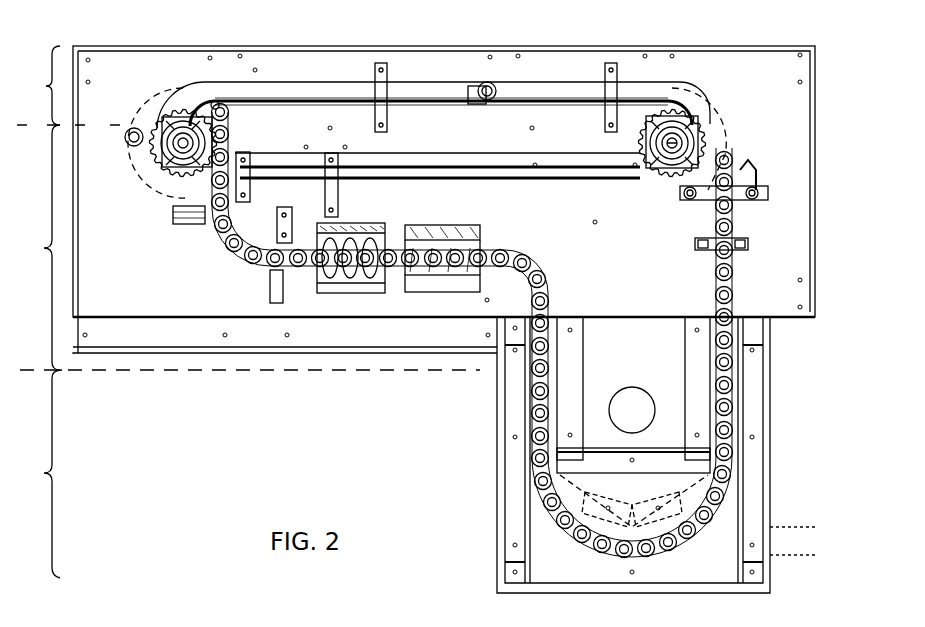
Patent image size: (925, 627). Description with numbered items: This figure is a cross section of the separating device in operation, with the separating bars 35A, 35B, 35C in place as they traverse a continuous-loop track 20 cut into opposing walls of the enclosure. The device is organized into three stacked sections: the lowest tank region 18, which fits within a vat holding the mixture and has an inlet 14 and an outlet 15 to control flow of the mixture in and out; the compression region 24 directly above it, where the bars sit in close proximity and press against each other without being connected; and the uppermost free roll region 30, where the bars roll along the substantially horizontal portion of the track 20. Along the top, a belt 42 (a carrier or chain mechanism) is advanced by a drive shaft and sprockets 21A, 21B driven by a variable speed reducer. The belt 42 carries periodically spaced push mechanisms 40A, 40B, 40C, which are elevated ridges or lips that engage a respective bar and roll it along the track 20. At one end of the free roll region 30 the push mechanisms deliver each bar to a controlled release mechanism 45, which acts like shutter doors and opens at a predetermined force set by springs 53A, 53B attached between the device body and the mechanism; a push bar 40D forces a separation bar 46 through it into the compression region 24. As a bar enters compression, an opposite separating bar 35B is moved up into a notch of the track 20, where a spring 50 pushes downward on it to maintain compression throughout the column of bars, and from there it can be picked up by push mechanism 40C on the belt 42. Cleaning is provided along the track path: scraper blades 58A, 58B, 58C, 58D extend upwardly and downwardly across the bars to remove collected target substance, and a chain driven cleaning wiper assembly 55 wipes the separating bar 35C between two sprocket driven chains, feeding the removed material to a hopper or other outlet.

The inlet 14 is at (818, 535).
The outlet 15 is at (643, 420).
The tank region 18 is at (38, 474).
The track 20 is at (742, 92).
The sprocket 21A is at (706, 127).
The sprocket 21B is at (165, 115).
The compression region 24 is at (247, 247).
The free roll region 30 is at (69, 85).
The separating bar 35A is at (485, 82).
The separating bar 35B is at (173, 212).
The separating bar 35C is at (270, 281).
The push mechanism 40A is at (468, 90).
The push mechanism 40B is at (134, 146).
The push mechanism 40C is at (258, 190).
The push bar 40D is at (722, 140).
The belt 42 is at (209, 98).
The controlled release mechanism 45 is at (762, 208).
The separation bar 46 is at (725, 213).
The spring 50 is at (238, 147).
The spring 53A is at (700, 177).
The spring 53B is at (743, 183).
The cleaning wiper assembly 55 is at (397, 296).
The scraper blade 58A is at (408, 226).
The scraper blade 58B is at (432, 245).
The scraper blade 58C is at (462, 238).
The scraper blade 58D is at (482, 245).